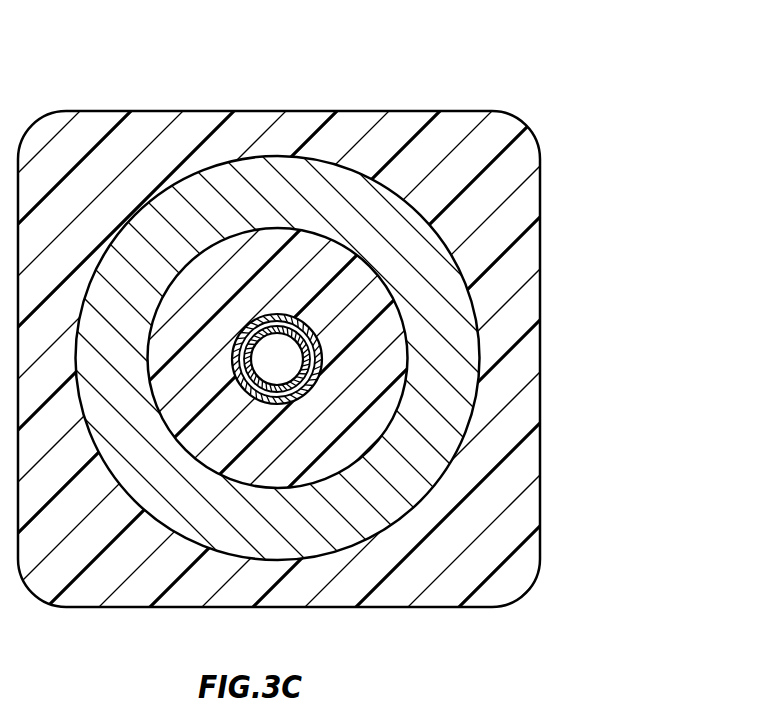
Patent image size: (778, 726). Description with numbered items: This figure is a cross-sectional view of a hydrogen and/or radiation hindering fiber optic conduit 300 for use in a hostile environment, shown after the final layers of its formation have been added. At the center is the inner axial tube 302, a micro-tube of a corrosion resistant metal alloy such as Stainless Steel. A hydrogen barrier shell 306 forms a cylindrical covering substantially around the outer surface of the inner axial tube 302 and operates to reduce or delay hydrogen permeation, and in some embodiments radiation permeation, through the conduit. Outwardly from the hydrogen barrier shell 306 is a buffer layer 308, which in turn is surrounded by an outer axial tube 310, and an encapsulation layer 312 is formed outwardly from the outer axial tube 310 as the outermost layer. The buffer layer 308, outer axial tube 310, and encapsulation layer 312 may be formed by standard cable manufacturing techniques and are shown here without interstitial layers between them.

The fiber optic conduit 300 is at (527, 98).
The inner axial tube 302 is at (260, 320).
The hydrogen barrier shell 306 is at (287, 318).
The buffer layer 308 is at (370, 306).
The outer axial tube 310 is at (457, 331).
The encapsulation layer 312 is at (512, 360).